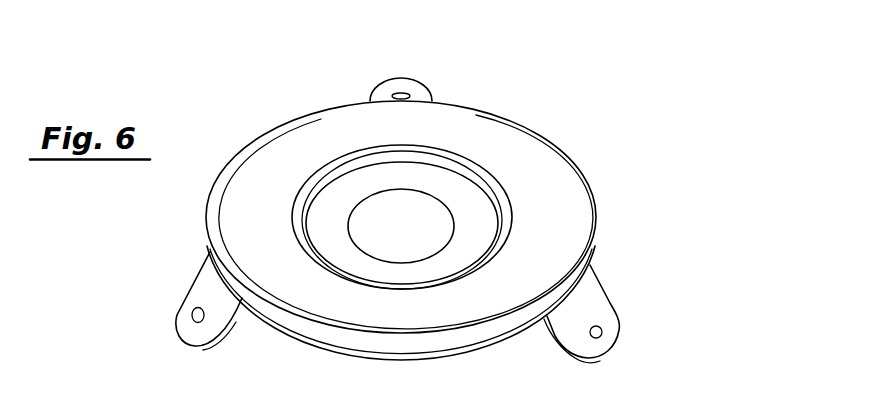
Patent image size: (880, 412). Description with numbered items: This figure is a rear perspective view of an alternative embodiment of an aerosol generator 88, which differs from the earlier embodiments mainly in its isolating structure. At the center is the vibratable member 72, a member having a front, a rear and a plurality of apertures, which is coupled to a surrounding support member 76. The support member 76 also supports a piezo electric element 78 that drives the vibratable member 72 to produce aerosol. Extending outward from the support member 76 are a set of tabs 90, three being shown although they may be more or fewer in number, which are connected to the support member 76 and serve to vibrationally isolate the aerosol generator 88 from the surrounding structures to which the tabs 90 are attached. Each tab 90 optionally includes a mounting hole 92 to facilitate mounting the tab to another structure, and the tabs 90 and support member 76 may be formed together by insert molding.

The vibratable member 72 is at (385, 228).
The support member 76 is at (590, 240).
The piezo electric element 78 is at (541, 193).
The aerosol generator 88 is at (572, 112).
The tabs 90 is at (428, 91).
The mounting holes 92 is at (405, 93).